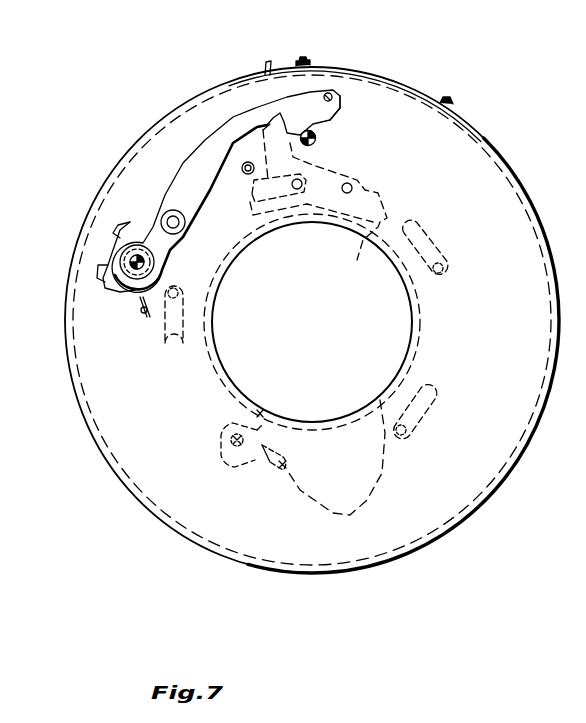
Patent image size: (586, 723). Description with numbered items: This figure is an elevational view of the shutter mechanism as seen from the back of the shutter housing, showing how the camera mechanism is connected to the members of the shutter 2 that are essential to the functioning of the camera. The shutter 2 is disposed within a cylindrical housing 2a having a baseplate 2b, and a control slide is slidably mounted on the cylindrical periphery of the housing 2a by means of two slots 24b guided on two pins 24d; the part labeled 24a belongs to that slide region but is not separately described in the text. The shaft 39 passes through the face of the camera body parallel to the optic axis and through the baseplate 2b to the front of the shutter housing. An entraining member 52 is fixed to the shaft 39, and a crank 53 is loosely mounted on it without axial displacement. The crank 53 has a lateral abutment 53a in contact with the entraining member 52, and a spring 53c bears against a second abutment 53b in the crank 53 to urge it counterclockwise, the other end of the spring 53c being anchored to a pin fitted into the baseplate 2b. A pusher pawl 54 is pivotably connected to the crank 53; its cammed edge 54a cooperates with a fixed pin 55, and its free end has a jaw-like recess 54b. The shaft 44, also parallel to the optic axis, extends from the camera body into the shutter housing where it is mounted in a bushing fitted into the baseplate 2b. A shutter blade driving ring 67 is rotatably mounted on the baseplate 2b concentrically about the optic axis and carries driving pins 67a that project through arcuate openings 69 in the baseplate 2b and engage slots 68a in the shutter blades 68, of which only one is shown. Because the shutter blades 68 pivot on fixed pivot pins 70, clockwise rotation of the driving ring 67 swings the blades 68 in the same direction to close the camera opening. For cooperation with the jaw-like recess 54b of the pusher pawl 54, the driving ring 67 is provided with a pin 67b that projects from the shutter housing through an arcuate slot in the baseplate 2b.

The shutter 2 is at (531, 441).
The cylindrical housing 2a is at (503, 479).
The baseplate 2b is at (466, 486).
The spring anchor tab 24a is at (266, 66).
The slots 24b is at (313, 80).
The pins 24d is at (302, 58).
The shaft 39 is at (130, 268).
The shaft 44 is at (318, 137).
The entraining member 52 is at (123, 253).
The crank 53 is at (147, 223).
The lateral abutment 53a is at (117, 237).
The second abutment 53b is at (103, 268).
The spring 53c is at (138, 303).
The pusher pawl 54 is at (197, 180).
The cammed edge 54a is at (263, 130).
The jaw-like recess 54b is at (334, 92).
The fixed pin 55 is at (246, 175).
The shutter blade driving ring 67 is at (373, 222).
The driving pins 67a is at (240, 458).
The pin 67b is at (340, 92).
The shutter blades 68 is at (330, 505).
The slots 68a is at (258, 437).
The arcuate openings 69 is at (265, 467).
The fixed pivot pins 70 is at (283, 420).